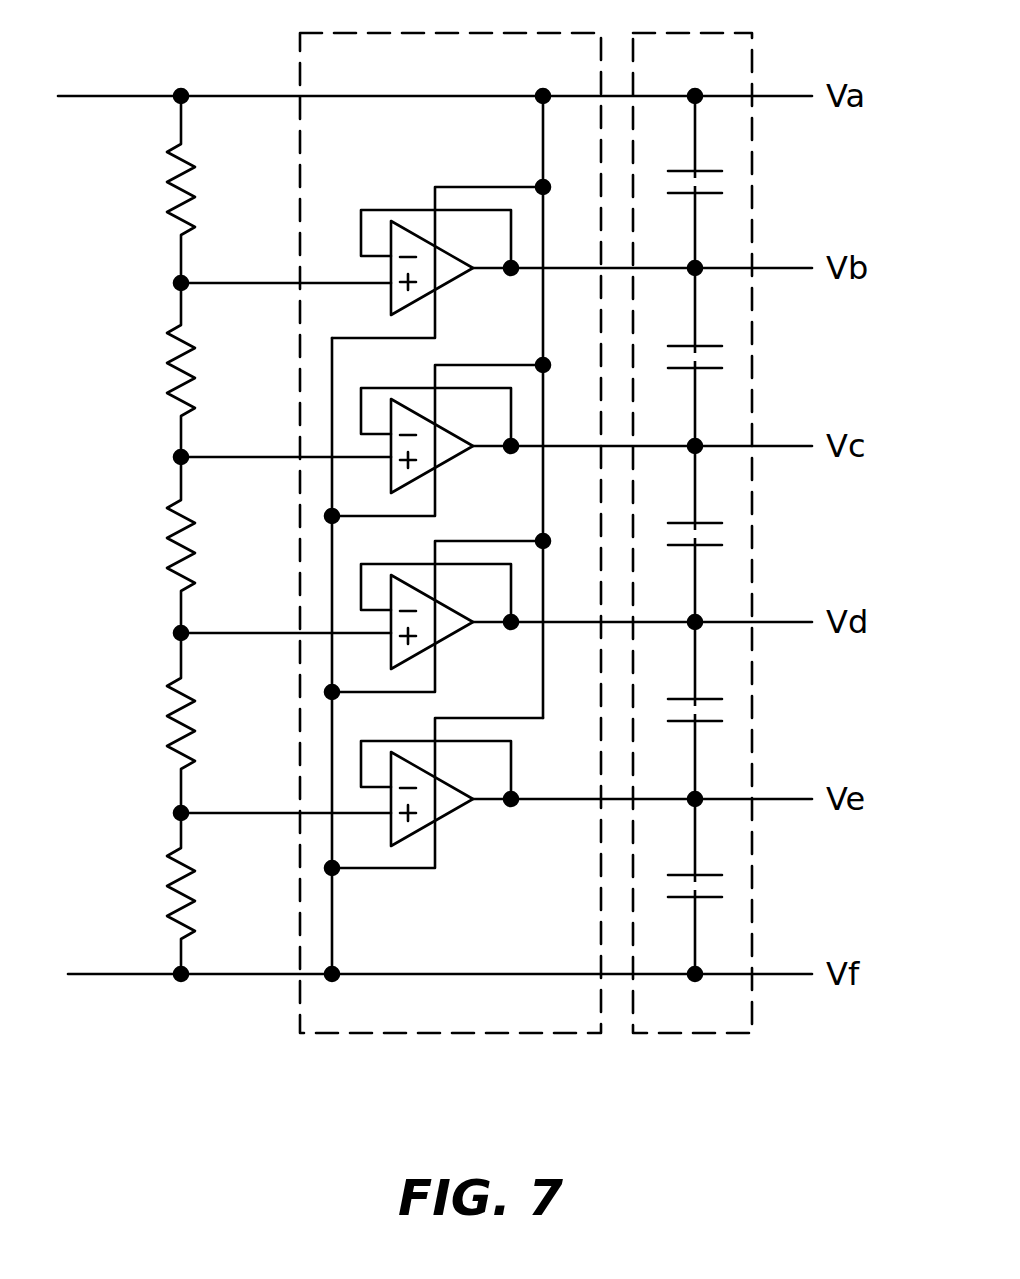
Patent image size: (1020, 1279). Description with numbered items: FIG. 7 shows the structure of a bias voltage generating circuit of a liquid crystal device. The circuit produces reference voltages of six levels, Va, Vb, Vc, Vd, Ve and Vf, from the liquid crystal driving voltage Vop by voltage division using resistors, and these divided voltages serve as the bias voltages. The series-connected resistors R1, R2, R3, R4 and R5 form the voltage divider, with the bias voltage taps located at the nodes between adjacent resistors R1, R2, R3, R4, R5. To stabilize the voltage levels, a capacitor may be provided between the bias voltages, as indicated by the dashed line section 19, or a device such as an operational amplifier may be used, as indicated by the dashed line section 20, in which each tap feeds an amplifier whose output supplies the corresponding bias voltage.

The dashed line section 19 is at (673, 1018).
The dashed line section 20 is at (468, 1018).
The resistor R1 is at (151, 189).
The resistor R2 is at (151, 370).
The resistor R3 is at (151, 545).
The resistor R4 is at (151, 723).
The resistor R5 is at (151, 893).